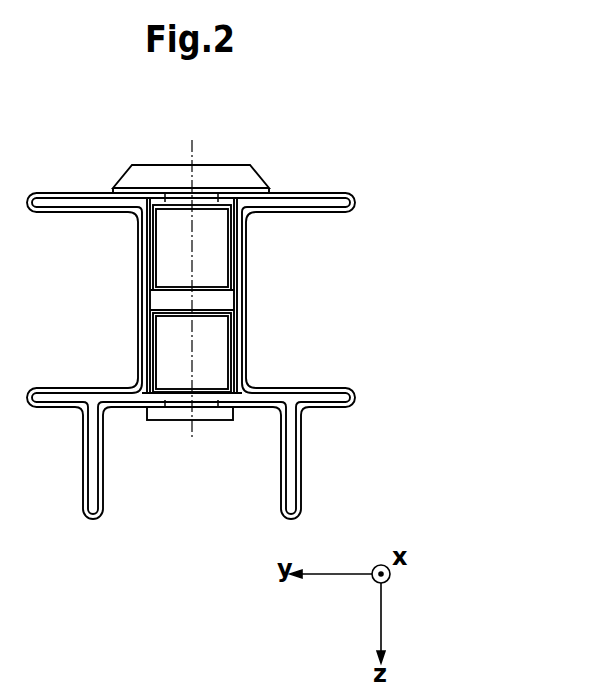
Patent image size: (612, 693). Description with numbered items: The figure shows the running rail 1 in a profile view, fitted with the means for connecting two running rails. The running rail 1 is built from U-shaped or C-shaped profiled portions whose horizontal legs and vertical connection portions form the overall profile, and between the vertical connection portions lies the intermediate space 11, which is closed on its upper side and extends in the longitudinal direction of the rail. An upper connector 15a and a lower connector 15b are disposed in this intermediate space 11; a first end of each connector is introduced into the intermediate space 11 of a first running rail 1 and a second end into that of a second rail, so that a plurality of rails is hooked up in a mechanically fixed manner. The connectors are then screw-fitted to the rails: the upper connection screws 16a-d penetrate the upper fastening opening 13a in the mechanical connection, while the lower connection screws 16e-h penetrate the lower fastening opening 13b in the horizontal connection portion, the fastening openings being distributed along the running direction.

The running rail 1 is at (90, 128).
The fastening opening 13a is at (179, 198).
The fastening opening 13b is at (176, 402).
The connection screws 16a-d is at (226, 178).
The connection screws 16e-h is at (217, 413).
The upper connector 15a is at (209, 265).
The lower connector 15b is at (204, 361).
The intermediate space 11 is at (232, 302).